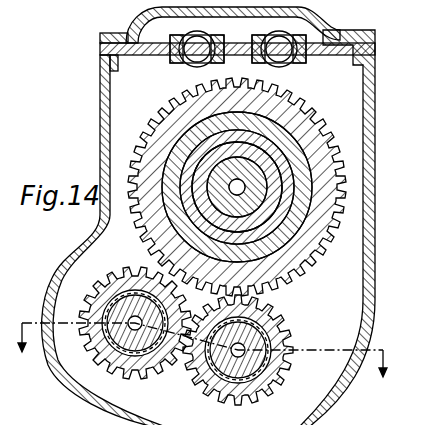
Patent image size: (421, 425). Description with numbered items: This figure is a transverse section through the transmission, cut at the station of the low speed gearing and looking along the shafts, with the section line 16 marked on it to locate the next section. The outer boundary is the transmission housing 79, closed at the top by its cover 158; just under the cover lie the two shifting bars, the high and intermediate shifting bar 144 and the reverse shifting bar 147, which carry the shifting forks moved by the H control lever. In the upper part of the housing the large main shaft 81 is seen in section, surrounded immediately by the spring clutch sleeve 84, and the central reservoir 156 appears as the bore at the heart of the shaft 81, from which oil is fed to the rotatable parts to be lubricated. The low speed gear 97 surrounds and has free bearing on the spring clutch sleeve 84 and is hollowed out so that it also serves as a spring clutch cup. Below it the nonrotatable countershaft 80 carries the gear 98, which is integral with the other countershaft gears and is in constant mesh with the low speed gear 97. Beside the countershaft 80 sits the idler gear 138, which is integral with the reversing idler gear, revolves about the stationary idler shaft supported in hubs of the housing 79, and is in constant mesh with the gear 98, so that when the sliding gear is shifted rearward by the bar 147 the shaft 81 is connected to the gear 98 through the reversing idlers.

The section line 16— 16 is at (203, 362).
The transmission housing 79 is at (100, 100).
The countershaft 80 is at (262, 338).
The main shaft 81 is at (323, 128).
The spring clutch sleeve 84 is at (248, 169).
The low speed gear 97 is at (317, 246).
The countershaft gear 98 is at (278, 372).
The idler gear 138 is at (110, 375).
The high and intermediate shifting bar 144 is at (130, 42).
The reverse shifting bar 147 is at (327, 55).
The reservoir 156 is at (165, 122).
The cover 158 is at (100, 37).